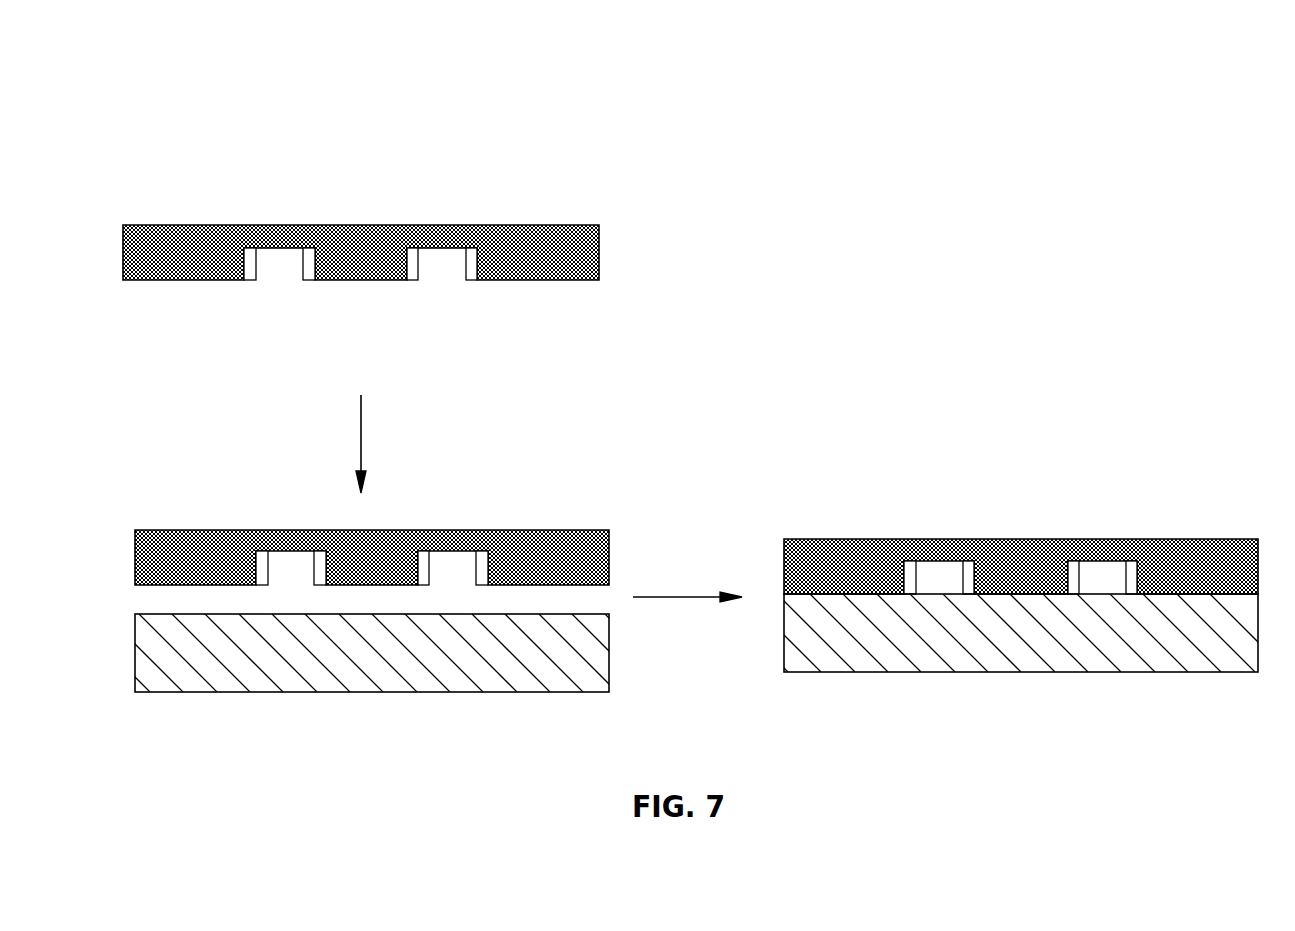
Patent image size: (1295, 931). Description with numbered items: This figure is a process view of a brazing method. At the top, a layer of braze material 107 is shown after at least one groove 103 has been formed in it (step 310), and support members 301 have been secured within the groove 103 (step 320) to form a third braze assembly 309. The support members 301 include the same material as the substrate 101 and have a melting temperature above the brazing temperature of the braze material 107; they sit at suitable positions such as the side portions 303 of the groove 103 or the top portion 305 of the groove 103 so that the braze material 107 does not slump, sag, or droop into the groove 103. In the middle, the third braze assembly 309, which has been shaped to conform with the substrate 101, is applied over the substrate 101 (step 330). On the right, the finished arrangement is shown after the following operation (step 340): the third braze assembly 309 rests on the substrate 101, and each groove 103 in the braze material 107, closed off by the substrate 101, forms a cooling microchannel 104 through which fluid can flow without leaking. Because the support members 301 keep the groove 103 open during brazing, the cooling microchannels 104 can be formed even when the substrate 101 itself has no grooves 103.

The substrate 101 is at (268, 693).
The groove 103 is at (279, 275).
The cooling microchannel 104 is at (943, 568).
The braze material 107 is at (532, 227).
The support member 301 is at (252, 281).
The side portion of the groove 303 is at (318, 263).
The top portion of the groove 305 is at (277, 248).
The third braze assembly 309 is at (202, 166).
The step of forming grooves 310 is at (450, 141).
The step of securing support members 320 is at (527, 141).
The step of applying the third braze assembly 330 is at (380, 444).
The transfer step direction 340 is at (671, 613).